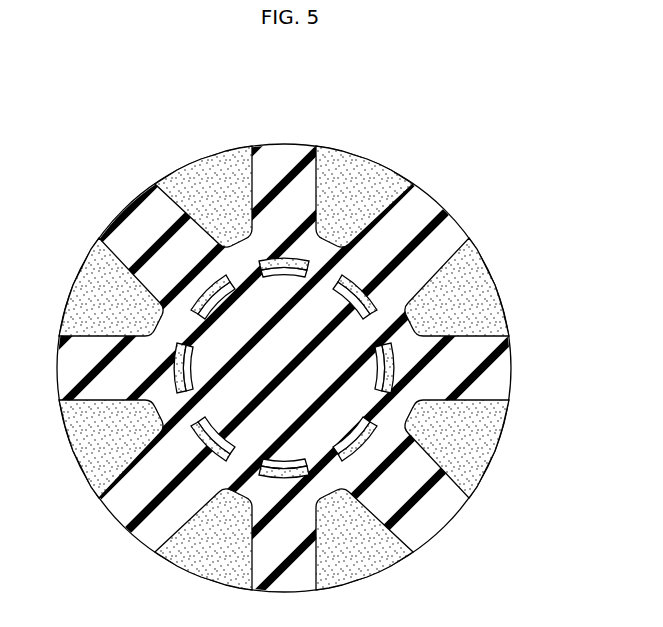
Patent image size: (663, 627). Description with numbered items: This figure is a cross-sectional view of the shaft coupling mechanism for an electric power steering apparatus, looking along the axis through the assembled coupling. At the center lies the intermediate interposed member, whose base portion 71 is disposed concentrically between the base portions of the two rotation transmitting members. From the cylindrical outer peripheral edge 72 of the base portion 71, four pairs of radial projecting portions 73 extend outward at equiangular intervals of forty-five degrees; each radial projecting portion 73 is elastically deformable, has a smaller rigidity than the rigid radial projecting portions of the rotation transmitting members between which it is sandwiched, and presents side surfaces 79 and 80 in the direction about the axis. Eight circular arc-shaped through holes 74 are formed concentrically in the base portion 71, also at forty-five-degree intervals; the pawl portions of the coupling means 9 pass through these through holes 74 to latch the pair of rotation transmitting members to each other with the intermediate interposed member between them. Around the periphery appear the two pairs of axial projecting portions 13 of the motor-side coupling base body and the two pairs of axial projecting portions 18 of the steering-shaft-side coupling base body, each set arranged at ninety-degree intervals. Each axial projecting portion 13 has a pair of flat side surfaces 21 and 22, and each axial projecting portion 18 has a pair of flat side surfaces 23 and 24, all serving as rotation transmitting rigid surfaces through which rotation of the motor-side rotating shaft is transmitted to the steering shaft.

The coupling means 9 is at (172, 360).
The axial projecting portion 13 is at (197, 182).
The axial projecting portion 18 is at (100, 280).
The flat side surface 21 is at (272, 217).
The flat side surface 22 is at (176, 228).
The flat side surface 23 is at (423, 227).
The flat side surface 24 is at (316, 200).
The base portion 71 is at (312, 402).
The cylindrical outer peripheral edge 72 is at (334, 490).
The radial projecting portion 73 is at (145, 227).
The circular arc-shaped through hole 74 is at (163, 293).
The side surface 79 is at (250, 177).
The side surface 80 is at (325, 240).